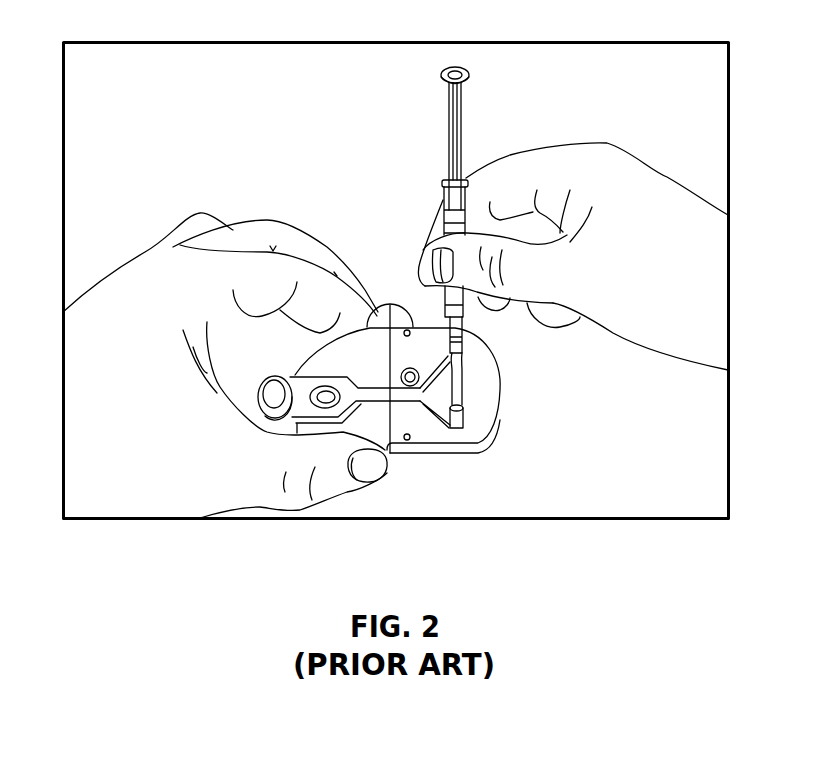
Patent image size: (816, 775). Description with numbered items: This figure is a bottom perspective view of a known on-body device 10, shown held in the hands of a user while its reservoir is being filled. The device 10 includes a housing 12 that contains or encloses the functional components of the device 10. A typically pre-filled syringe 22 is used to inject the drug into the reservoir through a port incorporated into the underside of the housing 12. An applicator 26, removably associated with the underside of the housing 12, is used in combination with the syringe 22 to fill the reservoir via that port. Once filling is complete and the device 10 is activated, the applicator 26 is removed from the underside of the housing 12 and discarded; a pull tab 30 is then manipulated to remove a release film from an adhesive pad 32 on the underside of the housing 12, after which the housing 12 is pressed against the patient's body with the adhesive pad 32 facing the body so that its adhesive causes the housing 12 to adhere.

The on-body device 10 is at (431, 403).
The housing 12 is at (407, 454).
The syringe 22 is at (461, 127).
The applicator 26 is at (465, 421).
The pull tab 30 is at (383, 313).
The adhesive pad 32 is at (432, 436).